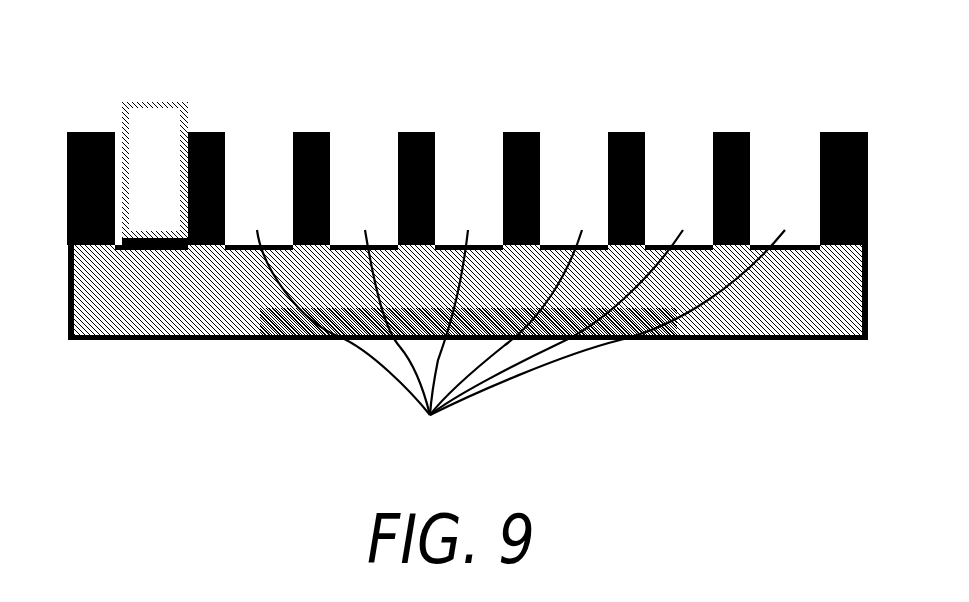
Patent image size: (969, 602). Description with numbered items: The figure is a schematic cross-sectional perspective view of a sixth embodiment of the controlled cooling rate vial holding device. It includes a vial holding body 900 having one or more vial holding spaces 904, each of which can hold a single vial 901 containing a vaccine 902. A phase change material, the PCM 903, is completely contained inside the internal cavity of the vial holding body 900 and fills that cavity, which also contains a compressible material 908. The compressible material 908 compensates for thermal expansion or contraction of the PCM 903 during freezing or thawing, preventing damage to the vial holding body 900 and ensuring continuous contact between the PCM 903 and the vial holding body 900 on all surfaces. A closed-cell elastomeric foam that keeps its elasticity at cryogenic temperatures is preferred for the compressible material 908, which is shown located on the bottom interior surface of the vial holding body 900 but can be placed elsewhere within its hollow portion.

The vial holding body 900 is at (843, 132).
The vial 901 is at (162, 123).
The vaccine 902 is at (148, 233).
The PCM 903 is at (100, 310).
The vial holding space 904 is at (521, 335).
The compressible material 908 is at (280, 327).